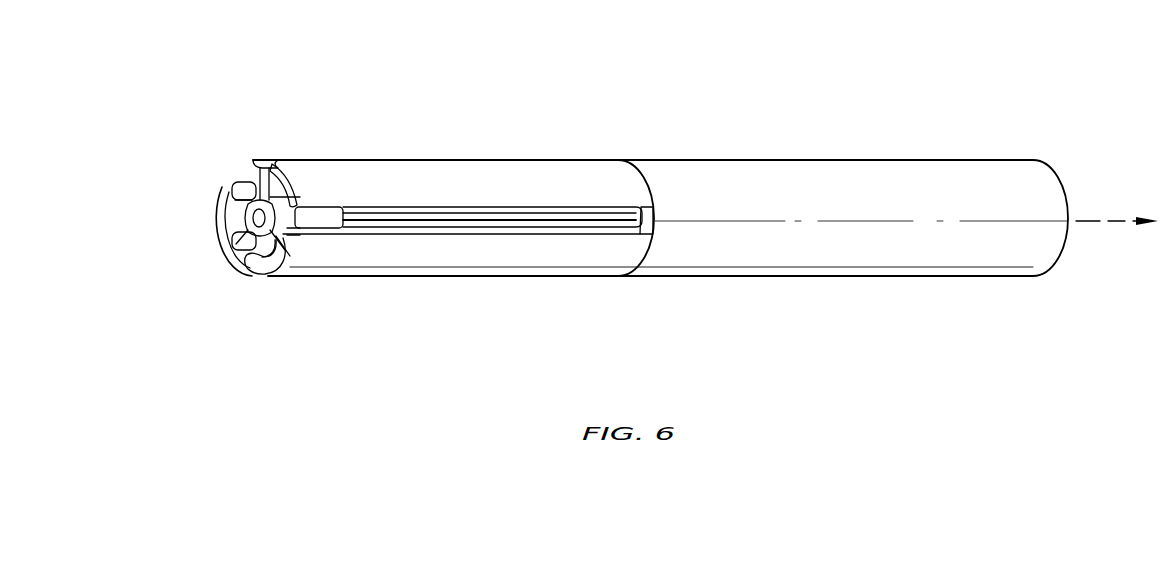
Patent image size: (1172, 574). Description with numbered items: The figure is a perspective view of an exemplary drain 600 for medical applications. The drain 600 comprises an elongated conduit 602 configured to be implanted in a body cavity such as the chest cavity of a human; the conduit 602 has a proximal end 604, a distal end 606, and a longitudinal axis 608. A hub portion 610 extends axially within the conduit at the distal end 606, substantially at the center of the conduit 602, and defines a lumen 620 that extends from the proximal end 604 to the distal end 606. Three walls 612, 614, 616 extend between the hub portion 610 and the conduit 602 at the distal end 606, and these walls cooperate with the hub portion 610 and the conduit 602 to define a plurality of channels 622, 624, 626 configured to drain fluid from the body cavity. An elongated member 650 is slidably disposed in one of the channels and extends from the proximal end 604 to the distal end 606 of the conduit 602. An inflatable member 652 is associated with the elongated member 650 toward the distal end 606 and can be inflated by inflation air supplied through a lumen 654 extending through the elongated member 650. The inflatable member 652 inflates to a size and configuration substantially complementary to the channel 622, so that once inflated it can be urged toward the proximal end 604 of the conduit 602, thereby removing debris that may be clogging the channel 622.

The drain 600 is at (150, 96).
The elongated conduit 602 is at (621, 291).
The proximal end 604 is at (1013, 295).
The distal end 606 is at (262, 305).
The longitudinal axis 608 is at (1100, 223).
The hub portion 610 is at (252, 208).
The wall 612 is at (264, 203).
The wall 614 is at (242, 237).
The wall 616 is at (278, 236).
The lumen 620 is at (253, 221).
The channel 622 is at (272, 197).
The channel 624 is at (220, 200).
The channel 626 is at (240, 253).
The elongated member 650 is at (421, 230).
The inflatable member 652 is at (327, 223).
The lumen 654 is at (485, 220).